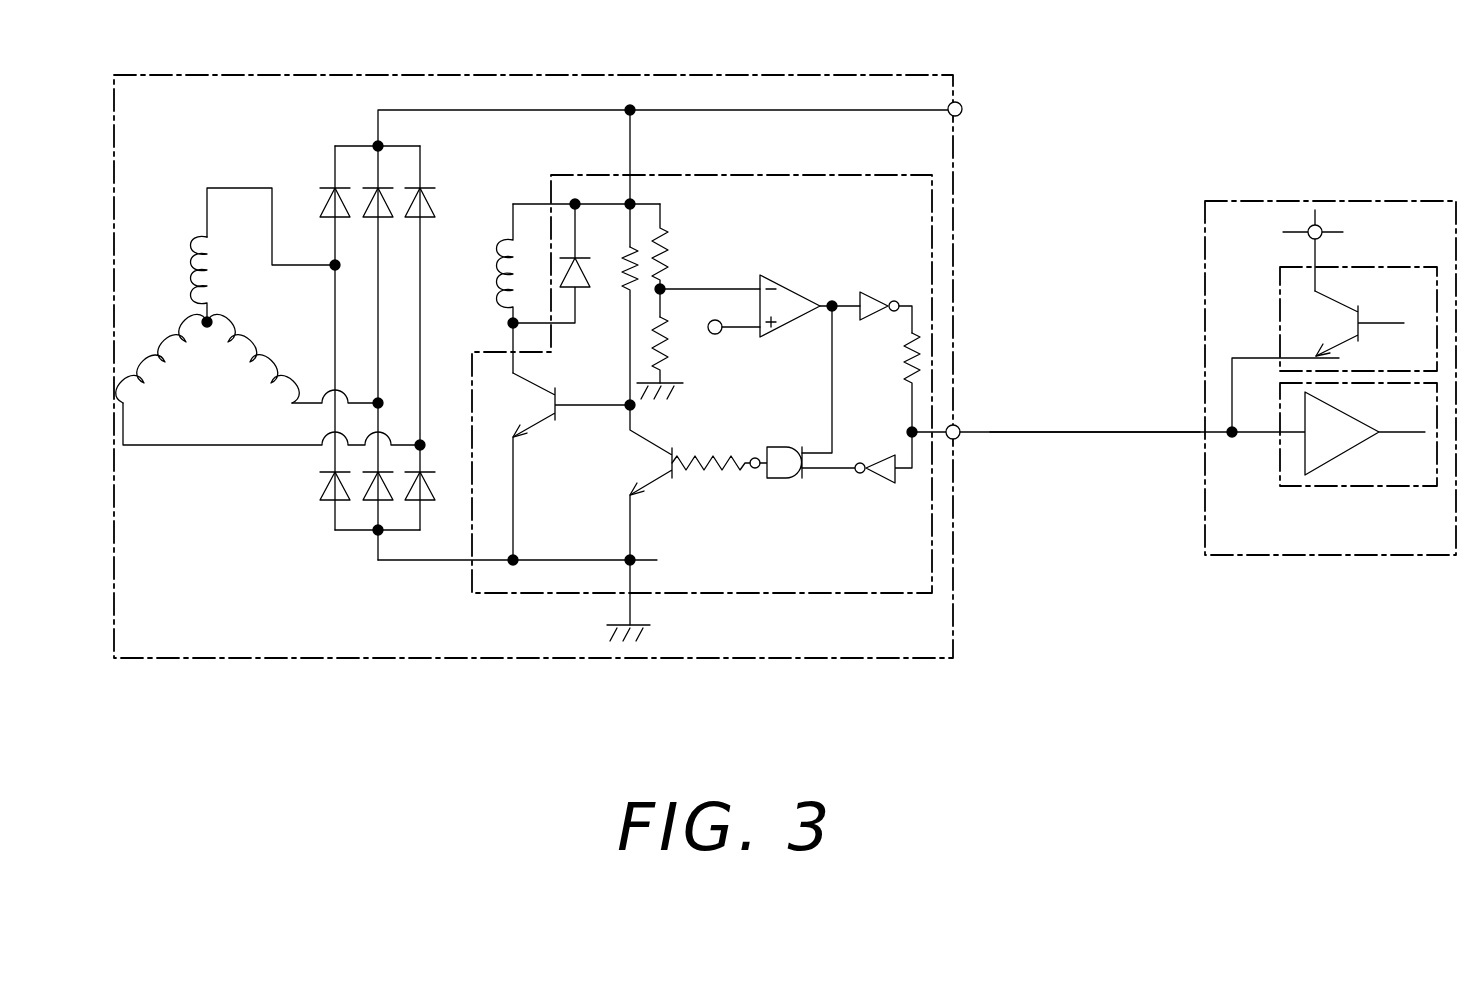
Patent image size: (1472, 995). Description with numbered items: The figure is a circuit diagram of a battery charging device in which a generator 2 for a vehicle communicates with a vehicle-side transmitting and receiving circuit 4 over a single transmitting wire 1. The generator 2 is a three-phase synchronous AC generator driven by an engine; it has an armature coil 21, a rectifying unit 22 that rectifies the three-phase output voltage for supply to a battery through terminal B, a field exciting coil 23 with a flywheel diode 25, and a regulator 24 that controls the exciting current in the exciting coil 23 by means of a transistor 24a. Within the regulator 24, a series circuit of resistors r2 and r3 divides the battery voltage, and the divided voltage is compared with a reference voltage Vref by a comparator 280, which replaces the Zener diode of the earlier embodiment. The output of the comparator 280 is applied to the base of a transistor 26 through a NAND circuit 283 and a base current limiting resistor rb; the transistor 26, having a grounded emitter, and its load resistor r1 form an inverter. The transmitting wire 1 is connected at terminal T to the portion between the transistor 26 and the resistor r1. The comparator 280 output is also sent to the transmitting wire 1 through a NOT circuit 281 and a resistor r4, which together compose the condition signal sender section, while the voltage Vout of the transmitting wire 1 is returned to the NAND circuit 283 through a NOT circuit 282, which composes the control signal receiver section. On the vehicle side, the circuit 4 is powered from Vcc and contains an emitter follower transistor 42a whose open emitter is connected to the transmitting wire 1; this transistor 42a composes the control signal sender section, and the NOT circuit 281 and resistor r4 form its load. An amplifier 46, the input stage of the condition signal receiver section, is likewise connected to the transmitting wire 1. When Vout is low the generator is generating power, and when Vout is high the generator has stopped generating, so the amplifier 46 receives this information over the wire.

The generator 2 is at (332, 658).
The armature coil 21 is at (202, 415).
The rectifying unit 22 is at (352, 248).
The field exciting coil 23 is at (500, 273).
The regulator 24 is at (802, 593).
The transistor 24a is at (540, 423).
The flywheel diode 25 is at (580, 290).
The transistor 26 is at (667, 500).
The load resistor r1 is at (618, 267).
The resistor r2 is at (670, 237).
The resistor r3 is at (673, 350).
The resistor r4 is at (905, 355).
The base current limiting resistor rb is at (713, 470).
The comparator 280 is at (793, 303).
The NOT circuit 281 is at (877, 293).
The NOT circuit 282 is at (883, 480).
The NAND circuit 283 is at (788, 473).
The battery terminal B is at (682, 155).
The terminal T is at (946, 414).
The reference voltage Vref is at (719, 313).
The output voltage of the transmitting wire Vout is at (913, 440).
The supply voltage Vcc is at (1281, 250).
The transmitting wire 1 is at (1058, 430).
The vehicle-side transmitting and receiving circuit 4 is at (1291, 199).
The emitter follower transistor 42a is at (1280, 310).
The amplifier 46 is at (1312, 448).